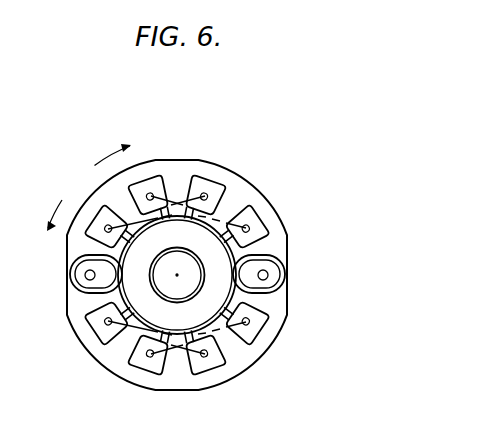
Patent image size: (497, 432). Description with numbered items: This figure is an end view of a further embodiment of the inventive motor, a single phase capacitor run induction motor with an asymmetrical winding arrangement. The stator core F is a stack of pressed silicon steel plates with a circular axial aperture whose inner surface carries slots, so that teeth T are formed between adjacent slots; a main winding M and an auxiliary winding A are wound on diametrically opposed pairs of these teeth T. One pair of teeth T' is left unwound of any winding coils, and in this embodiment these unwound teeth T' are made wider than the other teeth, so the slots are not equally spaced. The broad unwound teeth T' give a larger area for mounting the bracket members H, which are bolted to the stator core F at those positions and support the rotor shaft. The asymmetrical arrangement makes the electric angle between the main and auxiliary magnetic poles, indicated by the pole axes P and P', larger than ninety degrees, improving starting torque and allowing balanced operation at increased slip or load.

The pole axis P is at (126, 167).
The pole axis P' is at (91, 228).
The auxiliary winding A is at (160, 183).
The main winding M is at (195, 192).
The bracket member H is at (132, 282).
The stator core F is at (99, 367).
The teeth T is at (183, 348).
The unwound teeth T' is at (262, 275).